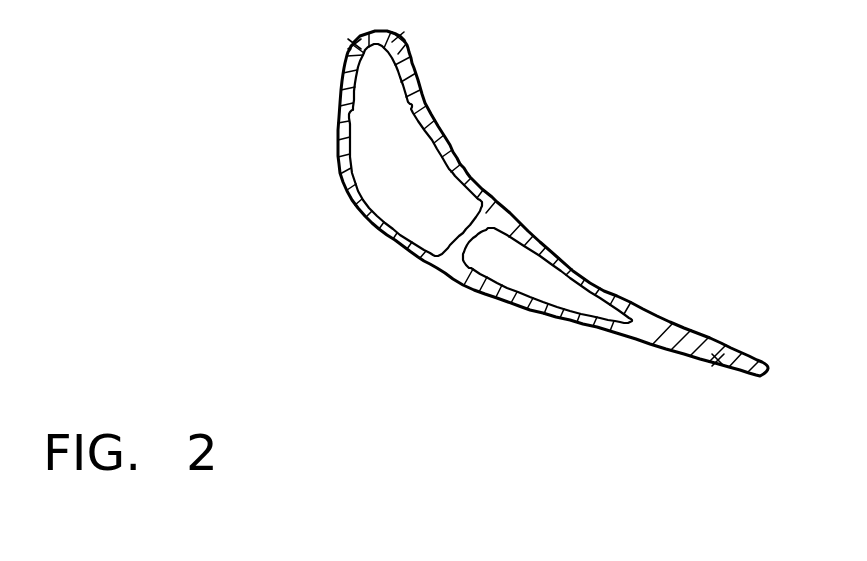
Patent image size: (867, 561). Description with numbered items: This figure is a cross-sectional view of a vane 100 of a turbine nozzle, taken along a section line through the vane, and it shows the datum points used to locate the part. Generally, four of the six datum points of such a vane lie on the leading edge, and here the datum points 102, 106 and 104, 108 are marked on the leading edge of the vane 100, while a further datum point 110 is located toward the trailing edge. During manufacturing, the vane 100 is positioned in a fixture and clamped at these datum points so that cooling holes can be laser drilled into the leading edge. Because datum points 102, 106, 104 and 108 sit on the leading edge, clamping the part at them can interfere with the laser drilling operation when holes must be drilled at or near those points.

The vane 100 is at (452, 143).
The datum point 102 is at (262, 57).
The datum point 106 is at (351, 45).
The datum point 104 is at (489, 41).
The datum point 108 is at (403, 36).
The datum point 110 is at (719, 364).